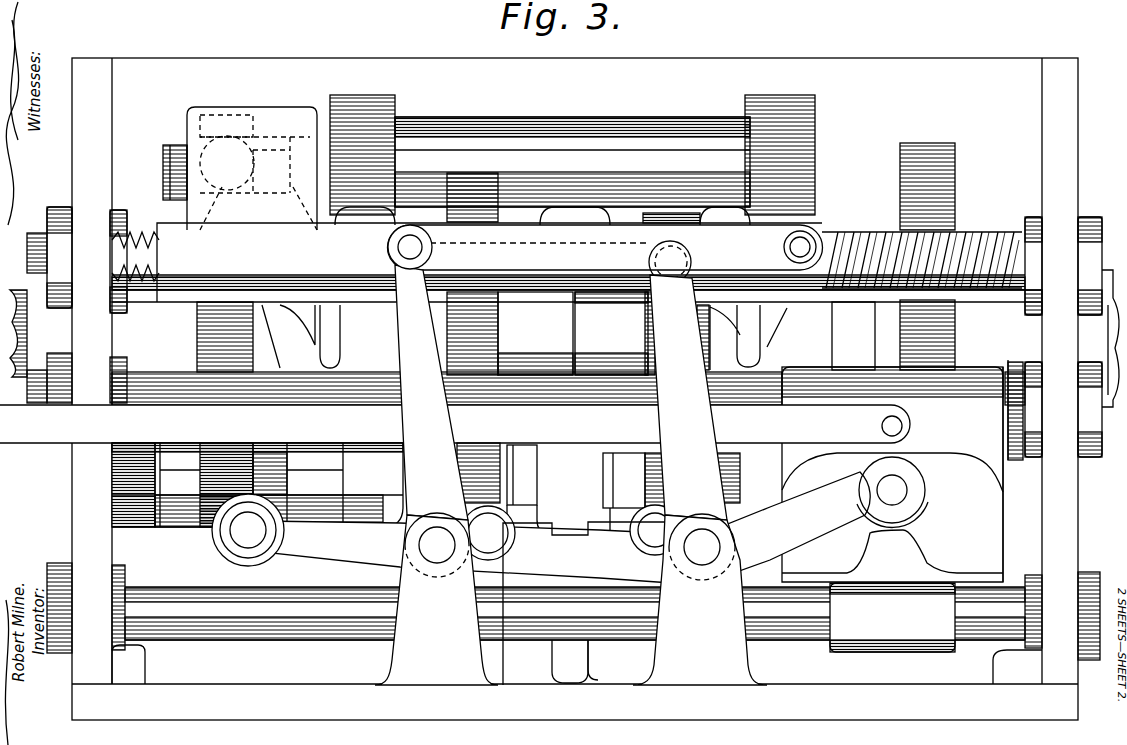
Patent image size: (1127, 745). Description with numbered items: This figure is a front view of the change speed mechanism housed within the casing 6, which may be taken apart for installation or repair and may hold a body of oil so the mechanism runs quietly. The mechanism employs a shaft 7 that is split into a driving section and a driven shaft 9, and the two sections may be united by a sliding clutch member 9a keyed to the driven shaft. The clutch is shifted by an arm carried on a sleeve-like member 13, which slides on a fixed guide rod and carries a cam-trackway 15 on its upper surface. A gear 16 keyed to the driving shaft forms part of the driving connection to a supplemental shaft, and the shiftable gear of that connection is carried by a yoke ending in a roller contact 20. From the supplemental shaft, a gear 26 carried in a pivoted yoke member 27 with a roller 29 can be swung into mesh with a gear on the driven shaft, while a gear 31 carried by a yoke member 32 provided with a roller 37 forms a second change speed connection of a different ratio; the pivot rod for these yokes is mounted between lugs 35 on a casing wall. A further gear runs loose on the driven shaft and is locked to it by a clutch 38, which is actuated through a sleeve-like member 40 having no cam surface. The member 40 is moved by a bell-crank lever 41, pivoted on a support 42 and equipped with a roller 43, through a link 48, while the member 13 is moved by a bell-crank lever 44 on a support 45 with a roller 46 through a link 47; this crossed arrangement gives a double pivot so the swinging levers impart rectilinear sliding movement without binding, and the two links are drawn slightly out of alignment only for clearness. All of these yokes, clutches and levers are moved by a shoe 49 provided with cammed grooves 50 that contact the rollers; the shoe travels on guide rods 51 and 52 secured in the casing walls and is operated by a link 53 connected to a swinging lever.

The casing 6 is at (1062, 508).
The shaft 7 is at (1072, 337).
The driven shaft 9 is at (893, 335).
The clutch member 9a is at (301, 336).
The sleeve-like member 13 is at (577, 262).
The cam-trackway 15 is at (165, 195).
The gear 16 is at (198, 324).
The contact 20 is at (195, 148).
The gear 26 is at (490, 470).
The yoke member 27 is at (520, 497).
The roller 29 is at (505, 555).
The gear 31 is at (650, 470).
The yoke member 32 is at (610, 497).
The lugs 35 is at (572, 160).
The roller / gear 37 is at (935, 210).
The clutch 38 is at (748, 337).
The sleeve-like member 40 is at (825, 232).
The bell-crank lever 41 is at (428, 372).
The support 42 is at (436, 599).
The roller 43 is at (214, 542).
The bell-crank lever 44 is at (566, 528).
The support 45 is at (700, 480).
The roller 46 is at (925, 512).
The link 47 is at (545, 283).
The link 48 is at (605, 263).
The shoe 49 is at (902, 471).
The cammed grooves 50 is at (930, 552).
The guide rod 51 is at (300, 400).
The guide rod 52 is at (557, 598).
The link 53 is at (455, 424).